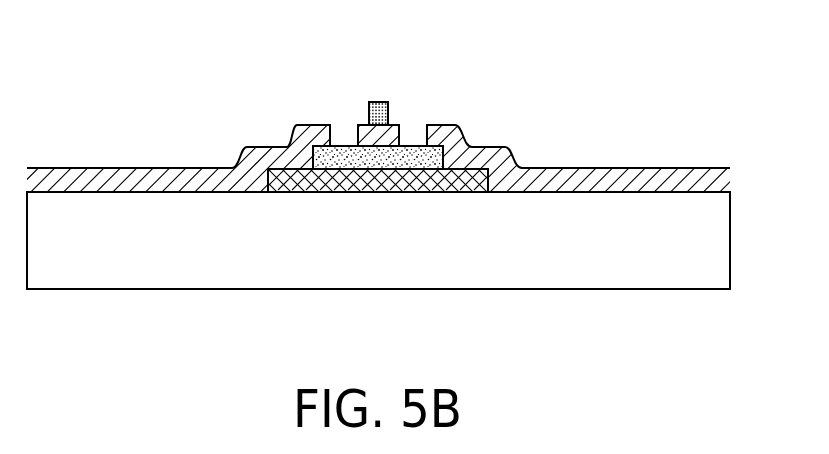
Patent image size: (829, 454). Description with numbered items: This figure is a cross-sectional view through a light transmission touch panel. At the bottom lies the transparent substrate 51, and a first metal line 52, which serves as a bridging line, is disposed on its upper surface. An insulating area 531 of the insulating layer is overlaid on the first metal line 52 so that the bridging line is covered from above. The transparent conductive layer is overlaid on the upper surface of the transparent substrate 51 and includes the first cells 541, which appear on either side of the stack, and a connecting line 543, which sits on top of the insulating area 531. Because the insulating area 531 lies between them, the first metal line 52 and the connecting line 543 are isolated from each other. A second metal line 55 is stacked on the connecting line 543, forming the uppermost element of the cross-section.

The transparent substrate 51 is at (715, 239).
The first metal line 52 is at (380, 192).
The insulating area 531 is at (415, 148).
The first cell 541 is at (267, 147).
The connecting line 543 is at (363, 133).
The second metal line 55 is at (383, 102).